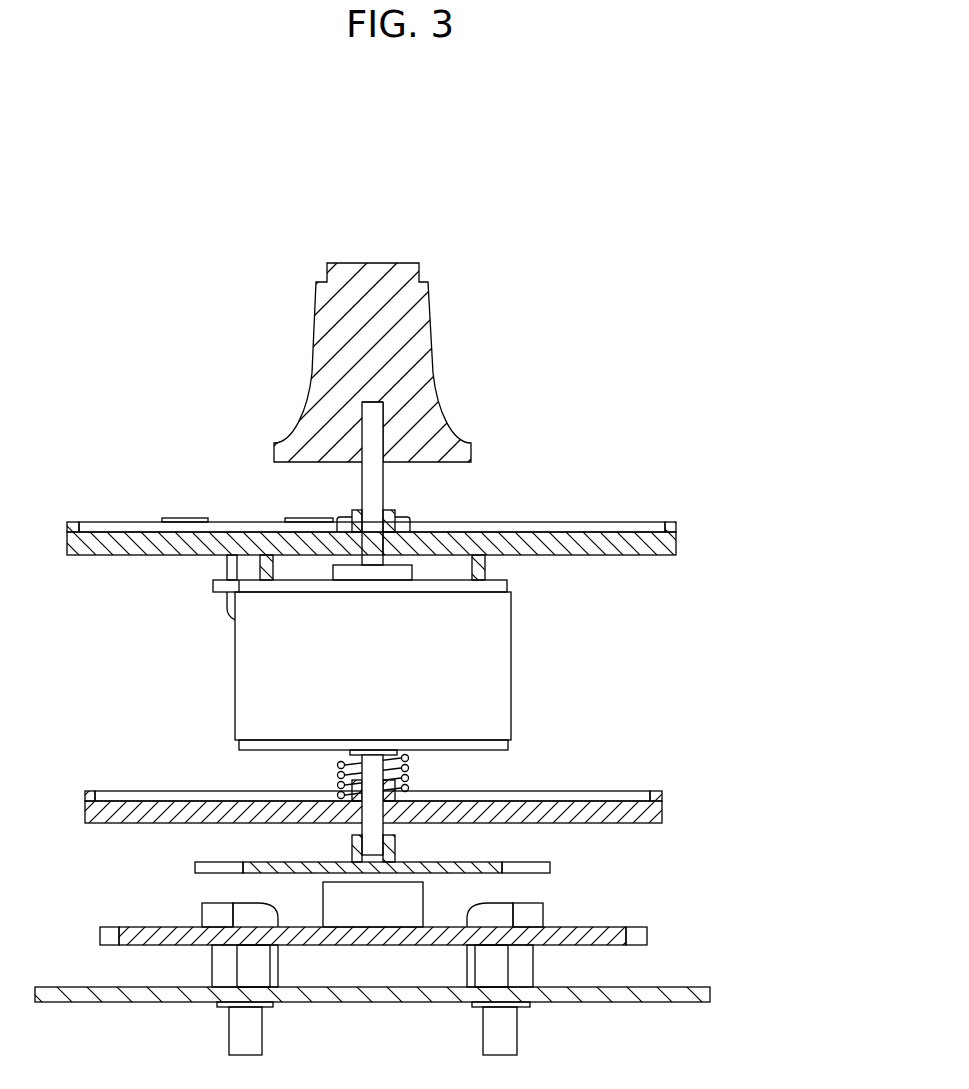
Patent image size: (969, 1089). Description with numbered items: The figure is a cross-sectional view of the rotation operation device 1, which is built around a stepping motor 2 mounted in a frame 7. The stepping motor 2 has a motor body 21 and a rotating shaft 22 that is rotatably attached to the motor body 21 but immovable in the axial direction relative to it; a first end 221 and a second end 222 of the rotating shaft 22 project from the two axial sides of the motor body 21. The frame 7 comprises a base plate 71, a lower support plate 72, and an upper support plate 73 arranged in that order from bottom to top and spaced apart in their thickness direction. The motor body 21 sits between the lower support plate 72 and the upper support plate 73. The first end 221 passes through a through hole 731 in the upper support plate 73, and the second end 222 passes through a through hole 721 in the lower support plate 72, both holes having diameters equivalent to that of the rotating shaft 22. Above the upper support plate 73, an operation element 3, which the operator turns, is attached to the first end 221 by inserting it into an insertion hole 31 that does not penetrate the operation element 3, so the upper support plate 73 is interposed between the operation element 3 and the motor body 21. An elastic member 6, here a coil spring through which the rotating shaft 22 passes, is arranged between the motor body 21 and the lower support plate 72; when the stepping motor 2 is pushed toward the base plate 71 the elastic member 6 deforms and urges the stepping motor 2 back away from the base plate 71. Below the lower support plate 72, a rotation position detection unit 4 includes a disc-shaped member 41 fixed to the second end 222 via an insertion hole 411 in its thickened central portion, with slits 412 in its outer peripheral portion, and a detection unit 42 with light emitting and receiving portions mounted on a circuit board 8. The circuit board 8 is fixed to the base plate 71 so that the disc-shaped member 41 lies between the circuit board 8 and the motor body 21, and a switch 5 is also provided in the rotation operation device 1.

The rotation operation device 1 is at (316, 228).
The stepping motor 2 is at (359, 655).
The motor body 21 is at (497, 660).
The rotating shaft 22 is at (352, 487).
The first end 221 is at (368, 448).
The second end 222 is at (370, 828).
The operation element 3 is at (435, 328).
The insertion hole 31 is at (397, 424).
The rotation position detection unit 4 is at (356, 875).
The disc-shaped member 41 is at (356, 854).
The insertion hole 411 is at (398, 846).
The slits 412 is at (544, 860).
The detection unit 42 is at (205, 915).
The switch 5 is at (378, 905).
The elastic member 6 is at (340, 775).
The frame 7 is at (96, 512).
The base plate 71 is at (712, 995).
The lower support plate 72 is at (407, 786).
The through hole 721 is at (398, 813).
The upper support plate 73 is at (678, 541).
The through hole 731 is at (397, 545).
The circuit board 8 is at (648, 937).